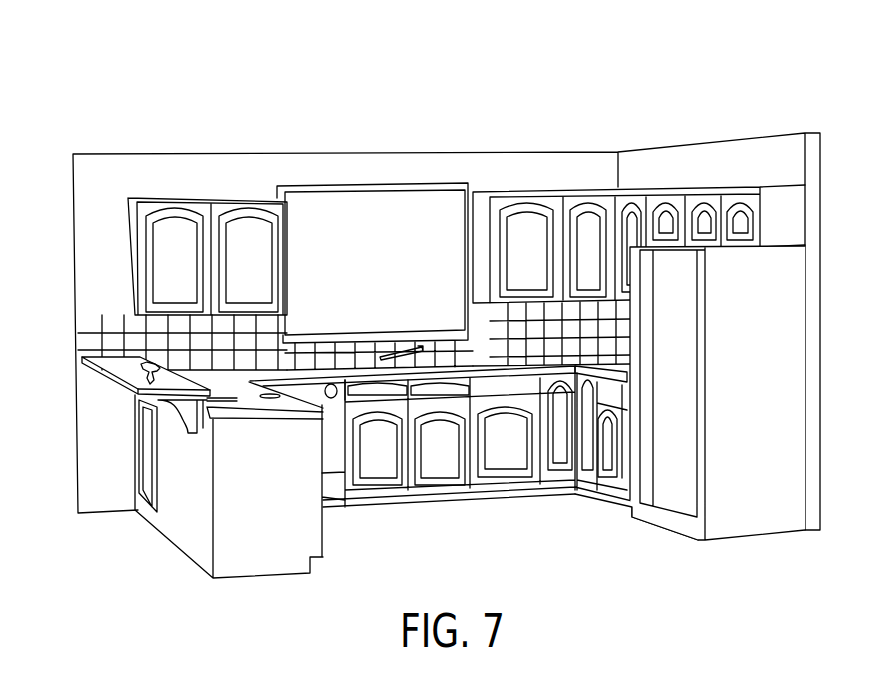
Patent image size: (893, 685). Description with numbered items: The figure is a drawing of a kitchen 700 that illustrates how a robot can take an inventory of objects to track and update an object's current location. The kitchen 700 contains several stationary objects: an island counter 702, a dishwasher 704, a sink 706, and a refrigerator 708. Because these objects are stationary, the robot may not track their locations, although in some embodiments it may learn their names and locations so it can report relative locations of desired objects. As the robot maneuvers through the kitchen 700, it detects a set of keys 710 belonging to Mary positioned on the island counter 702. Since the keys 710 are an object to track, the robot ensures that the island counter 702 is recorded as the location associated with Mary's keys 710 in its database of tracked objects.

The kitchen 700 is at (149, 85).
The island counter 702 is at (117, 370).
The dishwasher 704 is at (328, 445).
The sink 706 is at (410, 403).
The refrigerator 708 is at (790, 388).
The set of keys 710 is at (137, 368).